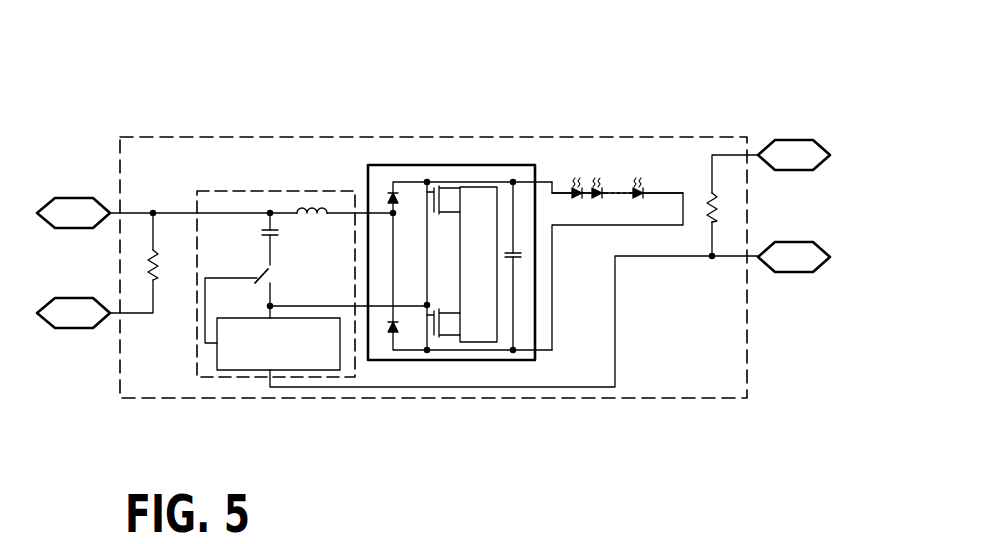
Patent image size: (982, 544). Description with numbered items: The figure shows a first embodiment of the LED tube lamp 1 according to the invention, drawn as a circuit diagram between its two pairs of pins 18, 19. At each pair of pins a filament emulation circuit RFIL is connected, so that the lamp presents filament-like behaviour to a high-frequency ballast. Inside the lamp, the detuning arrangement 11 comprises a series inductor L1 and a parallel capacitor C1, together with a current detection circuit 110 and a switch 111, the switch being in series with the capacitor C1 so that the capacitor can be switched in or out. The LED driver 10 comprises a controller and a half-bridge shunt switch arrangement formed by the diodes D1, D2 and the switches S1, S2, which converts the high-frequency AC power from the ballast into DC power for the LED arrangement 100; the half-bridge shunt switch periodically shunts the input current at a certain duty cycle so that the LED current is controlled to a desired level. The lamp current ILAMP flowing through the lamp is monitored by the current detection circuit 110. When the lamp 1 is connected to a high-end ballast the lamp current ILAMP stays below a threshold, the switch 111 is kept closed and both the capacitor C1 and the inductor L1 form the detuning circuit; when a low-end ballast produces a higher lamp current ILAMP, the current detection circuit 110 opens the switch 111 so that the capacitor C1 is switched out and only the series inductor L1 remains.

The LED tube lamp 1 is at (256, 112).
The LED driver 10 is at (490, 165).
The detuning arrangement 11 is at (290, 192).
The pins 18 is at (72, 198).
The pins 19 is at (790, 140).
The LED arrangement 100 is at (620, 178).
The current detection circuit 110 is at (240, 378).
The switch 111 is at (260, 272).
The diode D1 is at (402, 200).
The diode D2 is at (400, 326).
The switch S1 is at (443, 214).
The switch S2 is at (443, 312).
The parallel capacitor C1 is at (278, 232).
The series inductor L1 is at (316, 200).
The filament emulation circuit RFIL is at (777, 204).
The lamp current ILAMP is at (678, 263).